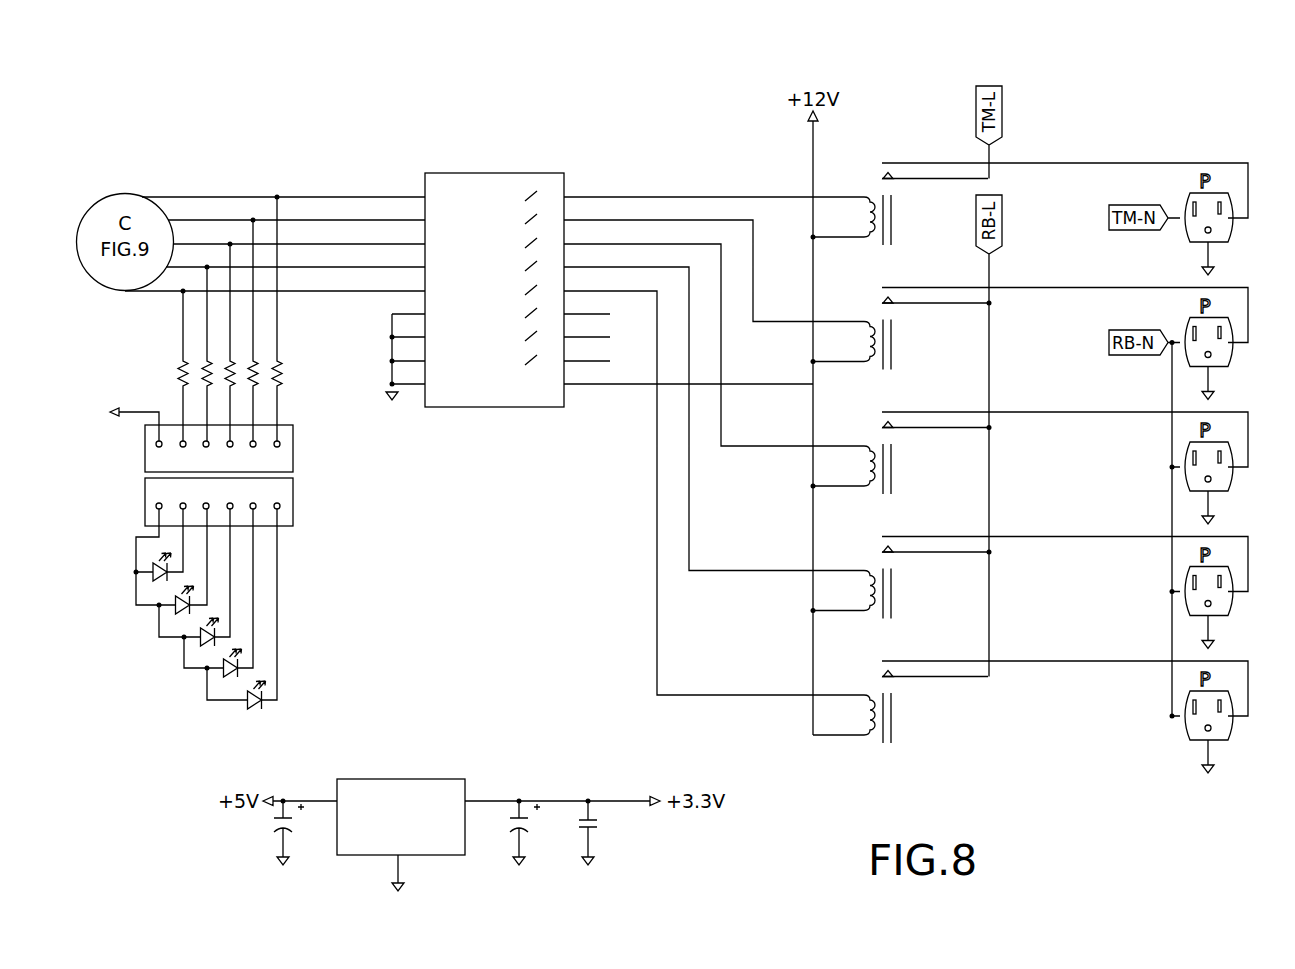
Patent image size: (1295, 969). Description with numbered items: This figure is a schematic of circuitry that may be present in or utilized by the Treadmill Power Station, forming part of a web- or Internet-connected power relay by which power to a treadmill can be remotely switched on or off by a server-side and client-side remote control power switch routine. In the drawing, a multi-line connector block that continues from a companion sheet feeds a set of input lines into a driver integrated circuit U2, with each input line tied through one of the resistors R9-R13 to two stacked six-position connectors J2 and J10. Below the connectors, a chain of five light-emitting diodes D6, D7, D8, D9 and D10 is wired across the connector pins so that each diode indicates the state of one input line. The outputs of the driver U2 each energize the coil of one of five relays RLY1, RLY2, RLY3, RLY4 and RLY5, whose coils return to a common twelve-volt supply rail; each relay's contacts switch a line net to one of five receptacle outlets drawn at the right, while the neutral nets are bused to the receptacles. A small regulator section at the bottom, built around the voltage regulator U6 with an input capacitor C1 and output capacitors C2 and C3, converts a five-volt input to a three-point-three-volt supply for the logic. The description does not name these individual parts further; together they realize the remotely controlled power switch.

The ULN2308A Darlington transistor array U2 is at (498, 278).
The six-pin connector J2 is at (219, 440).
The six-pin connector J10 is at (242, 502).
The 750 ohm resistors R9-R13 is at (273, 375).
The light emitting diode D6 is at (143, 546).
The light emitting diode D7 is at (155, 562).
The light emitting diode D8 is at (177, 578).
The light emitting diode D9 is at (201, 594).
The light emitting diode D10 is at (220, 610).
The relay RLY1 is at (1030, 204).
The relay RLY2 is at (1030, 329).
The relay RLY3 is at (1030, 453).
The relay RLY4 is at (1030, 578).
The relay RLY5 is at (1030, 702).
The 4.7 uF capacitor C1 is at (288, 806).
The 1.0 uF capacitor C2 is at (522, 806).
The 0.1 uF capacitor C3 is at (595, 806).
The MCP1825S voltage regulator U6 is at (401, 822).